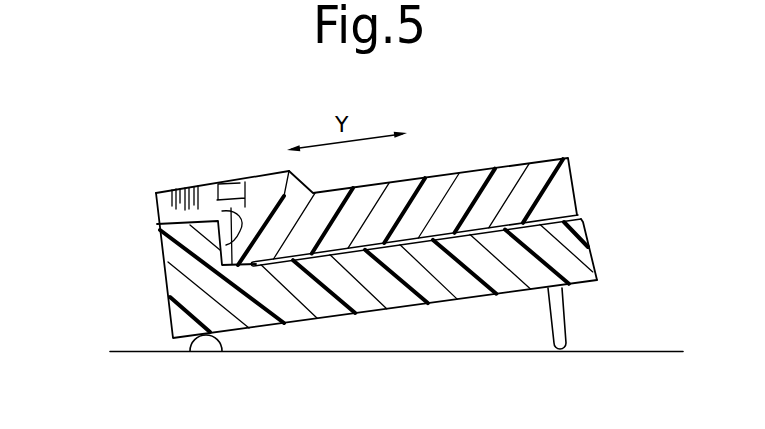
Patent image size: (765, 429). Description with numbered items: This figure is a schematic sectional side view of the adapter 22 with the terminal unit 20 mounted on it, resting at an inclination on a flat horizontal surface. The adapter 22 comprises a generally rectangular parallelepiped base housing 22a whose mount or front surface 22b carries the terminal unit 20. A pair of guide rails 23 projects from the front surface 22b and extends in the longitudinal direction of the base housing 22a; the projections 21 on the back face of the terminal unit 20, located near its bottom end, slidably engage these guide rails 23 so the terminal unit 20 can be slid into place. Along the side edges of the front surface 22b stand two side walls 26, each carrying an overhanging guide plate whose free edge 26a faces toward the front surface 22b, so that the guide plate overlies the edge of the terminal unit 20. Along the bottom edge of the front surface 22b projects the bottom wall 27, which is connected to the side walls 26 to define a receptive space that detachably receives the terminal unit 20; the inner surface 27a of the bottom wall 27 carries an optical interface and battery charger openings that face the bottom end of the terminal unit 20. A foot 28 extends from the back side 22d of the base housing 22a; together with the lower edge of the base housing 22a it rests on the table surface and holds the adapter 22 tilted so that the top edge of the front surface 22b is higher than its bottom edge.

The terminal unit 20 is at (582, 185).
The projections 21 is at (254, 266).
The adapter 22 is at (594, 251).
The base housing 22a is at (577, 277).
The front surface 22b is at (583, 226).
The back side 22d is at (548, 290).
The guide rails 23 is at (473, 237).
The side walls 26 is at (224, 203).
The free edge 26a is at (246, 208).
The bottom wall 27 is at (167, 264).
The inner surface 27a is at (157, 223).
The foot 28 is at (566, 341).